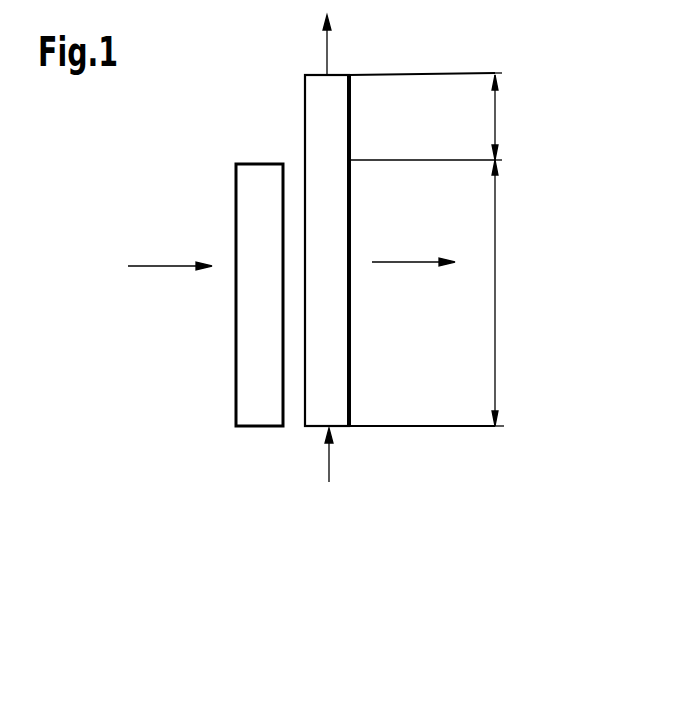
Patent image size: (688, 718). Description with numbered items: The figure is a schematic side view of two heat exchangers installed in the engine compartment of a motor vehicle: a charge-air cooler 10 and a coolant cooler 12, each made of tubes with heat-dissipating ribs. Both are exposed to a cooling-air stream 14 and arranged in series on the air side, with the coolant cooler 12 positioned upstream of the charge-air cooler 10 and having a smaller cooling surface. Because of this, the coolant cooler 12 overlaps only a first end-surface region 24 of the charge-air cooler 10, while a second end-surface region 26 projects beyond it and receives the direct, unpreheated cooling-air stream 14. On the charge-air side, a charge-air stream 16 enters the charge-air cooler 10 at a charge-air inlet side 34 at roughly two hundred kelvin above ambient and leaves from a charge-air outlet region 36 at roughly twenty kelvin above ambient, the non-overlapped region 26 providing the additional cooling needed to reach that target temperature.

The charge-air cooler 10 is at (349, 77).
The coolant cooler 12 is at (250, 363).
The cooling-air stream 14 is at (153, 265).
The charge-air stream 16 is at (329, 472).
The end-surface region 24 is at (497, 287).
The end-surface region 26 is at (497, 115).
The charge-air inlet side 34 is at (315, 428).
The charge-air outlet region 36 is at (320, 75).